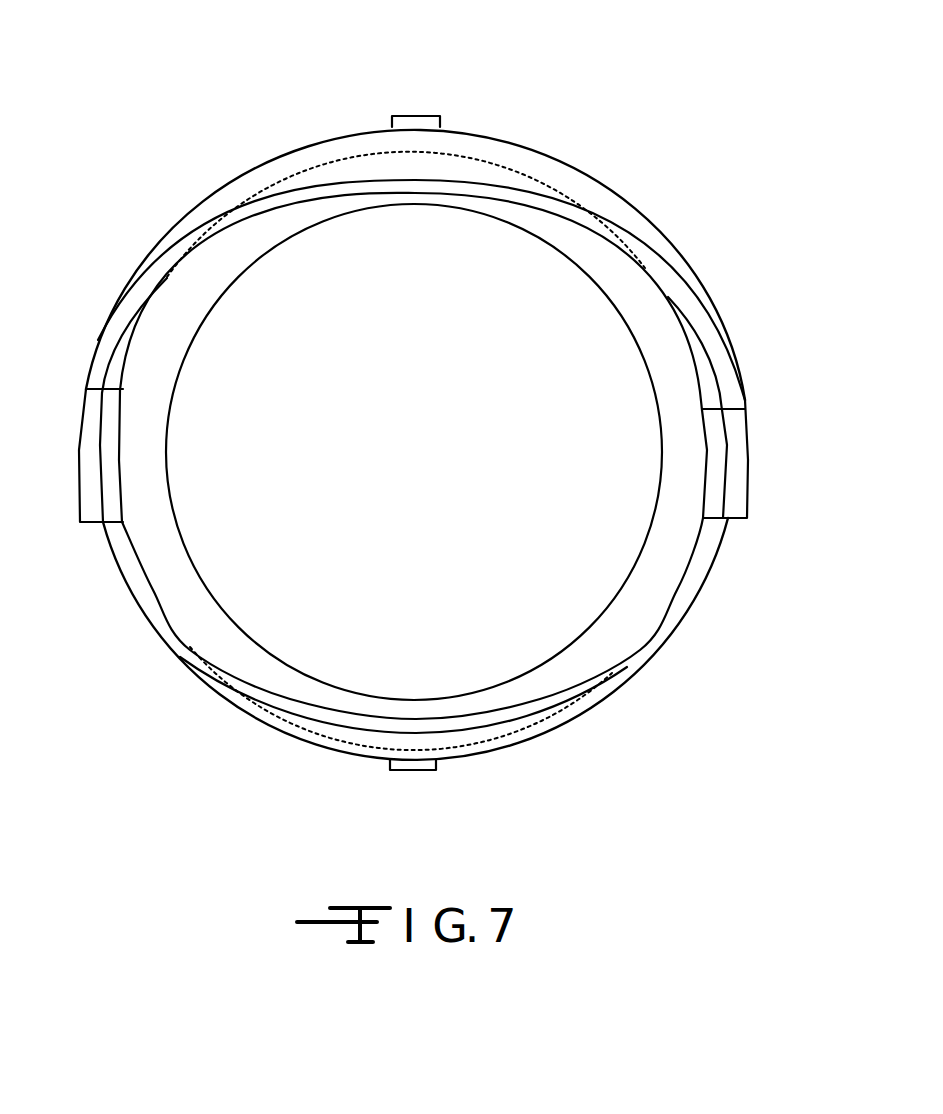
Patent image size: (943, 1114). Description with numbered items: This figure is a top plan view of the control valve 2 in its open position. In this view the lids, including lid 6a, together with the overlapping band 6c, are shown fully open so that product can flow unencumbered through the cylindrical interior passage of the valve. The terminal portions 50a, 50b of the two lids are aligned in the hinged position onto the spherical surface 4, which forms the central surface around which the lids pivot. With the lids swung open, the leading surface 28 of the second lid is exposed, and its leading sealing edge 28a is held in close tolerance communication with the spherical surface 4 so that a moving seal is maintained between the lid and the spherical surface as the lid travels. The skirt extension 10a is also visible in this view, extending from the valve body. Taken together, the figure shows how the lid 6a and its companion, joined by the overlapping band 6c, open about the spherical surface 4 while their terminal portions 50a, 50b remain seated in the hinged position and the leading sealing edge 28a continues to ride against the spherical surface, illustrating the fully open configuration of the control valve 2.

The control valve 2 is at (249, 106).
The spherical surface 4 is at (530, 187).
The lid 6a is at (443, 740).
The overlapping band 6c is at (488, 150).
The skirt extension 10a is at (415, 114).
The leading surface 28 is at (120, 360).
The leading sealing edge 28a is at (158, 302).
The terminal portion 50a is at (110, 508).
The terminal portion 50b is at (88, 417).